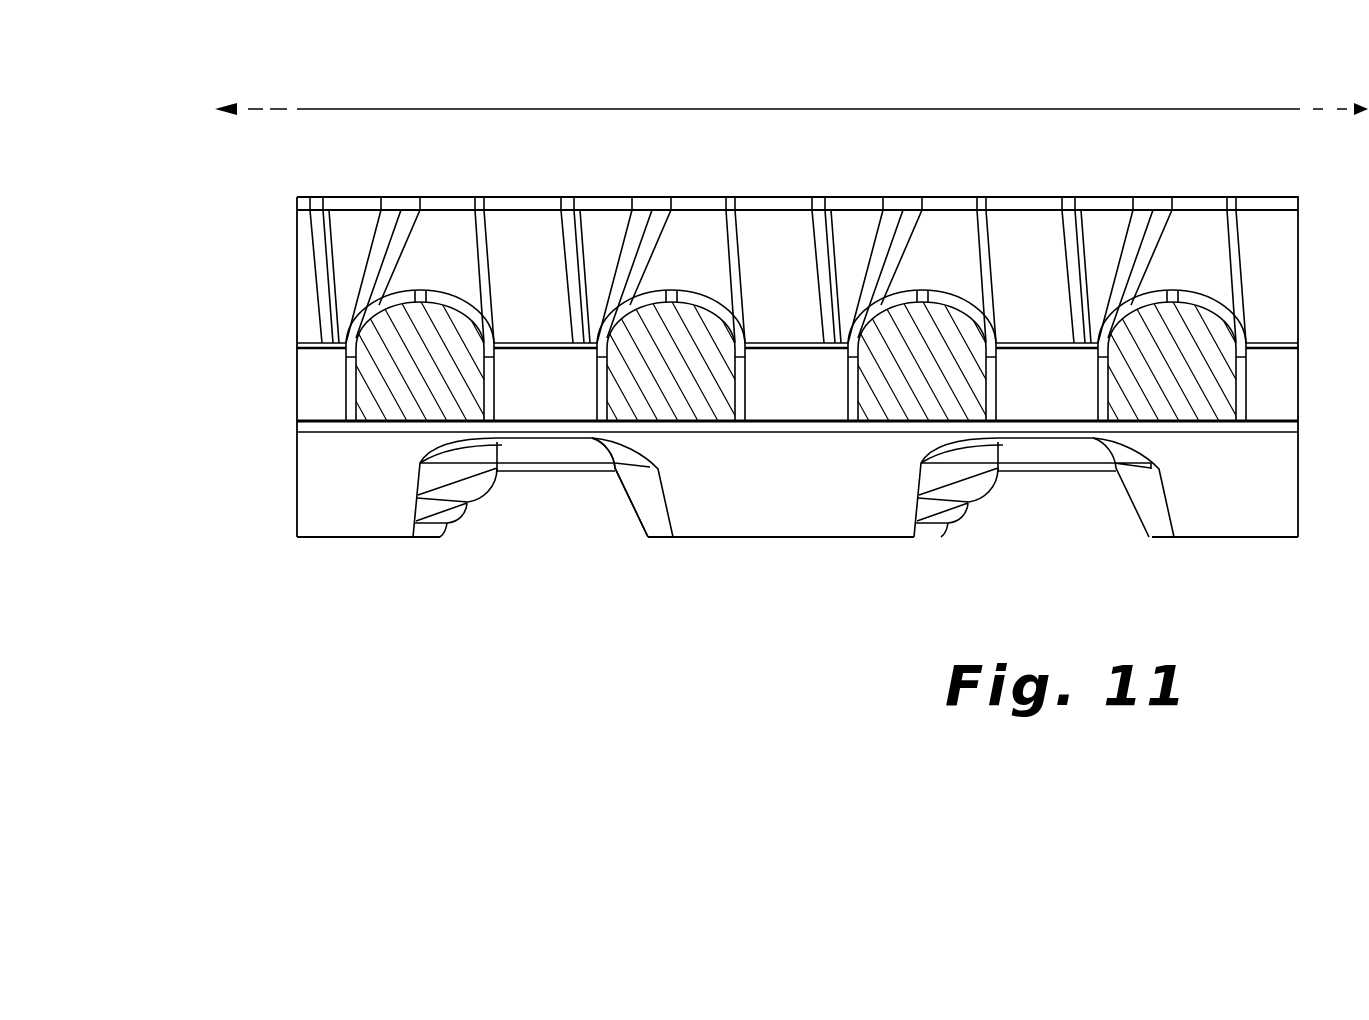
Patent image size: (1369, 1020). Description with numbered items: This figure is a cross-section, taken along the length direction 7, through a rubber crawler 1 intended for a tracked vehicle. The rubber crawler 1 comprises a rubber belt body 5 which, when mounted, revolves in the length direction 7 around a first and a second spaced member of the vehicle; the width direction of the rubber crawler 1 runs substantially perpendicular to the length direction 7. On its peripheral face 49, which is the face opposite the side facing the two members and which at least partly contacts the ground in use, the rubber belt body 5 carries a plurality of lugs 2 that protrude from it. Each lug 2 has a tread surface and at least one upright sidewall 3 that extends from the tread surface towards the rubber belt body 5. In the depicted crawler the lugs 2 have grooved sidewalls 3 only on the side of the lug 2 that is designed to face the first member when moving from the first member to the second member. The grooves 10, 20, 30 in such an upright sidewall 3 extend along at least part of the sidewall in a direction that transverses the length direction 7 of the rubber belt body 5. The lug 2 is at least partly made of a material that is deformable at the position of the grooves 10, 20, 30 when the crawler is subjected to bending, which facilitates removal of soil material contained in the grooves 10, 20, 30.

The rubber crawler 1 is at (180, 153).
The length direction 7 is at (675, 109).
The rubber belt body 5 is at (690, 391).
The lug 2 is at (774, 504).
The groove 30 is at (496, 461).
The groove 20 is at (475, 492).
The upright sidewall 3 is at (520, 527).
The groove 10 is at (450, 520).
The peripheral face 49 is at (779, 572).